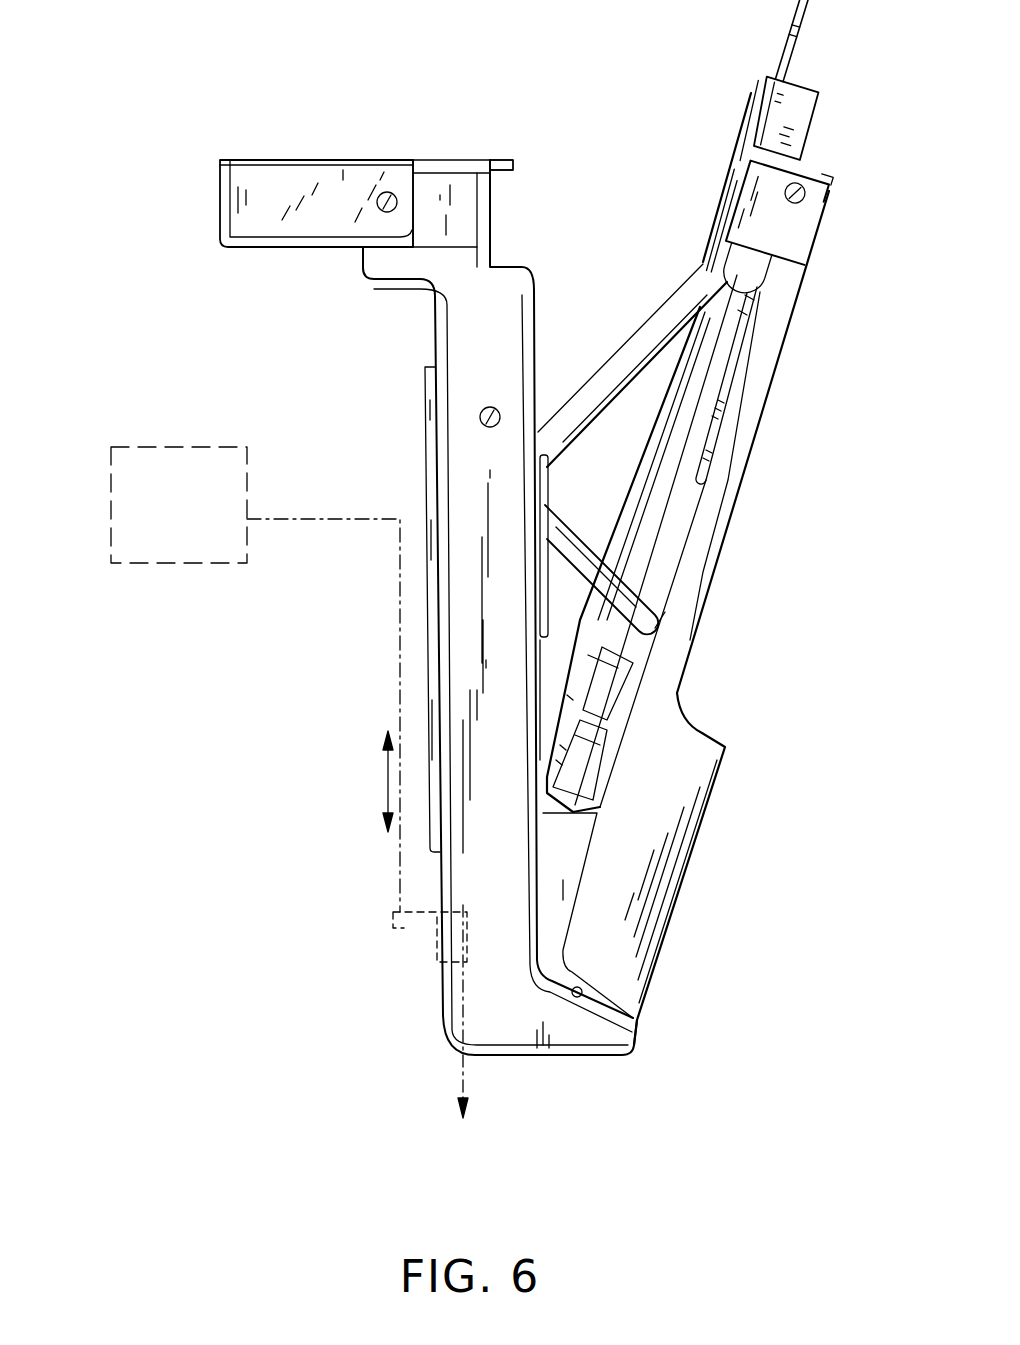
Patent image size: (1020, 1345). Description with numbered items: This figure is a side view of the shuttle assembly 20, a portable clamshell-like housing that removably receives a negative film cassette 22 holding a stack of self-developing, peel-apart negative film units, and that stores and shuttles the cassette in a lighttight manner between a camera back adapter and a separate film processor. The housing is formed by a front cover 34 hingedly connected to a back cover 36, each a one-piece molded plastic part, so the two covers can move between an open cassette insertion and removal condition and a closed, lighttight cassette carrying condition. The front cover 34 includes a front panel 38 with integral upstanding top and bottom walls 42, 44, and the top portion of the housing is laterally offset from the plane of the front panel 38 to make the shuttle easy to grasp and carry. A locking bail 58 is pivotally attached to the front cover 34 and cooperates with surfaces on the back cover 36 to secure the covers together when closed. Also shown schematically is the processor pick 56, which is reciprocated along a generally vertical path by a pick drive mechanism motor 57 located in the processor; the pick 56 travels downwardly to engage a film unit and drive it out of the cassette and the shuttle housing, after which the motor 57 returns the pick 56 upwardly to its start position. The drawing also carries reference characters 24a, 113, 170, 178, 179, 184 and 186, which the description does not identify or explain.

The shuttle assembly 20 is at (381, 58).
The negative film cassette 22 is at (798, 128).
The rod 24a is at (803, 34).
The front cover 34 is at (455, 330).
The back cover 36 is at (796, 285).
The front panel 38 is at (433, 362).
The top wall 42 is at (455, 162).
The bottom wall 44 is at (540, 1058).
The processor pick 56 is at (392, 910).
The pick drive mechanism motor 57 is at (111, 467).
The locking bail 58 is at (262, 224).
The tab 113 is at (516, 162).
The pivot assembly 170 is at (680, 213).
The strip 178 is at (730, 400).
The bar 179 is at (683, 507).
The strut 184 is at (637, 341).
The strut 186 is at (562, 517).